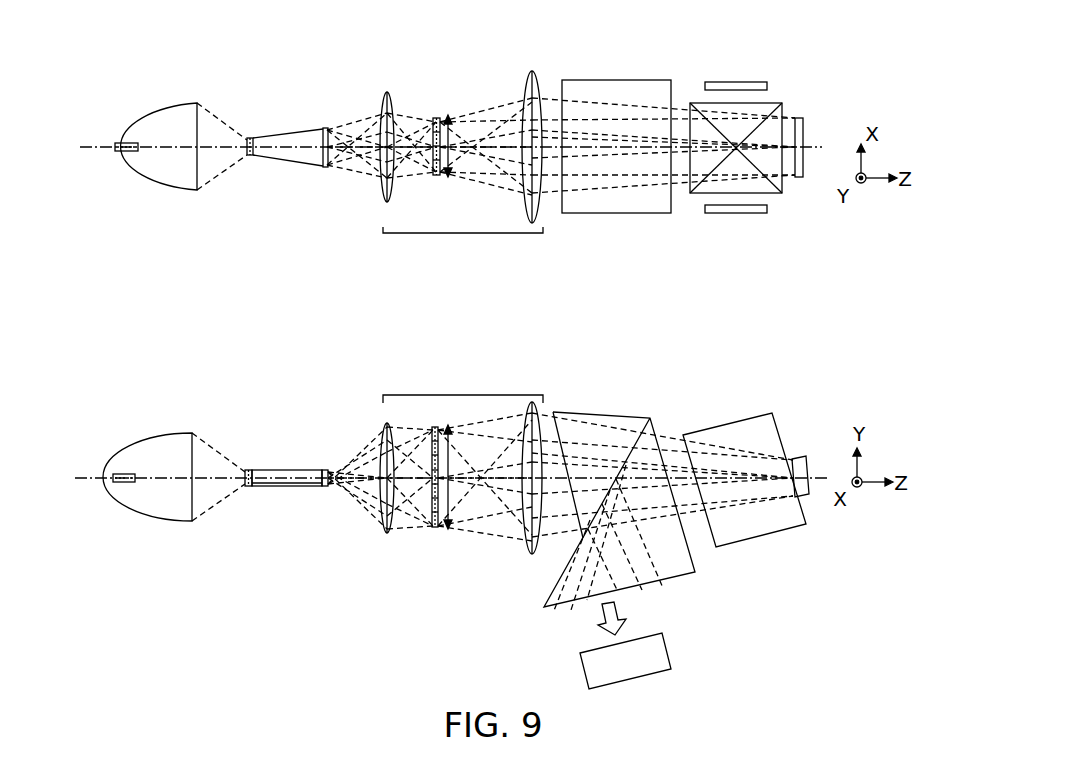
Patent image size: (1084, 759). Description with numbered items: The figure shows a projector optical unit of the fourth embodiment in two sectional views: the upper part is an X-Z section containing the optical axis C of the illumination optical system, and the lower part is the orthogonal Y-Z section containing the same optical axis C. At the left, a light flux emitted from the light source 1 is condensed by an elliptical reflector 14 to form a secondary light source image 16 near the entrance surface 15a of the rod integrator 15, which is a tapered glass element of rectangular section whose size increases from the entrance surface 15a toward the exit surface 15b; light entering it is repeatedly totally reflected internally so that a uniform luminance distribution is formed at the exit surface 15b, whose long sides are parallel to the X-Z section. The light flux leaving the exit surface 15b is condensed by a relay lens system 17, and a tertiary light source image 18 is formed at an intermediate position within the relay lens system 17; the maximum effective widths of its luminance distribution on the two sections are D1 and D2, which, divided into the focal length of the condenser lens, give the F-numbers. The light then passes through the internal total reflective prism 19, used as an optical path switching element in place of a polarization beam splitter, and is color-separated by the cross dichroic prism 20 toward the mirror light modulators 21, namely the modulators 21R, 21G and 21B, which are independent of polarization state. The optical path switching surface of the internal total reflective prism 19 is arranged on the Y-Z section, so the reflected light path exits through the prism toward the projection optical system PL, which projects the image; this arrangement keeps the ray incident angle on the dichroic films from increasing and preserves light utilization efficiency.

The light source 1 is at (127, 142).
The elliptical reflector 14 is at (133, 182).
The rod integrator 15 is at (293, 170).
The entrance surface 15a is at (251, 138).
The exit surface 15b is at (325, 128).
The secondary light source image 16 is at (249, 170).
The relay lens system 17 is at (463, 233).
The tertiary light source image 18 is at (435, 190).
The internal total reflective prism 19 is at (619, 213).
The cross dichroic prism 20 is at (716, 202).
The mirror light modulators 21 is at (800, 183).
The mirror light modulator for blue 21B is at (740, 70).
The mirror light modulator for green 21G is at (825, 147).
The mirror light modulator for red 21R is at (740, 229).
The optical axis C is at (91, 153).
The maximum effective width on the X-Z section D1 is at (453, 133).
The maximum effective width on the Y-Z section D2 is at (458, 493).
The projection optical system PL is at (668, 650).